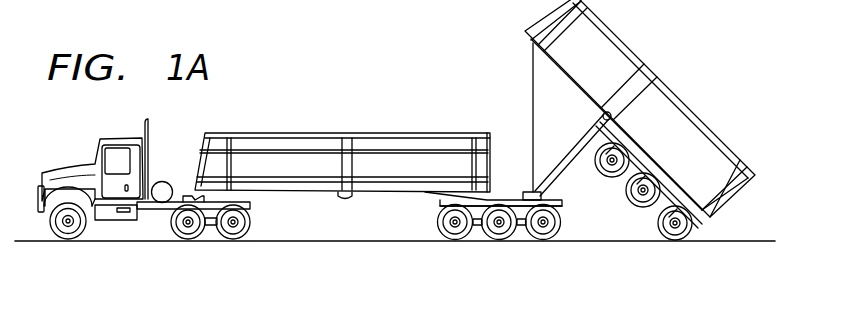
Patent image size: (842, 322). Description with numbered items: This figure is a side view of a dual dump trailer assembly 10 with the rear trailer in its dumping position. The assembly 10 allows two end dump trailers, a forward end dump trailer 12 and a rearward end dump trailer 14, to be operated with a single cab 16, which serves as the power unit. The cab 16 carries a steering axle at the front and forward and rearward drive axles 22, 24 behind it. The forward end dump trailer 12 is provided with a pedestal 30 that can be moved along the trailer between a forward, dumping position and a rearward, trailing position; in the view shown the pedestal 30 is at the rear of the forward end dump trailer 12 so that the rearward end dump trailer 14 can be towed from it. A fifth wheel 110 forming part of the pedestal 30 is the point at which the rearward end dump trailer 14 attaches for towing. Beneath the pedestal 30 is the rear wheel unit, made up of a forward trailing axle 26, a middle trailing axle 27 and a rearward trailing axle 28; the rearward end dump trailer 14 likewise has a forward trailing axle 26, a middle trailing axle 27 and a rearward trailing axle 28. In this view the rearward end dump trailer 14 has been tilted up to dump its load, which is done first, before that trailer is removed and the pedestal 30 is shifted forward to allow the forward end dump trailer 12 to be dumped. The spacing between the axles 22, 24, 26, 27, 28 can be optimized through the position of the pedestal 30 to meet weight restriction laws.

The dual dump trailer assembly 10 is at (357, 76).
The forward end dump trailer 12 is at (277, 132).
The rearward end dump trailer 14 is at (660, 81).
The cab 16 is at (144, 205).
The forward drive axle 22 is at (188, 228).
The rearward drive axle 24 is at (233, 228).
The forward trailing axle 26 is at (439, 219).
The middle trailing axle 27 is at (499, 228).
The rearward trailing axle 28 is at (545, 228).
The pedestal 30 is at (466, 253).
The fifth wheel 110 is at (548, 196).